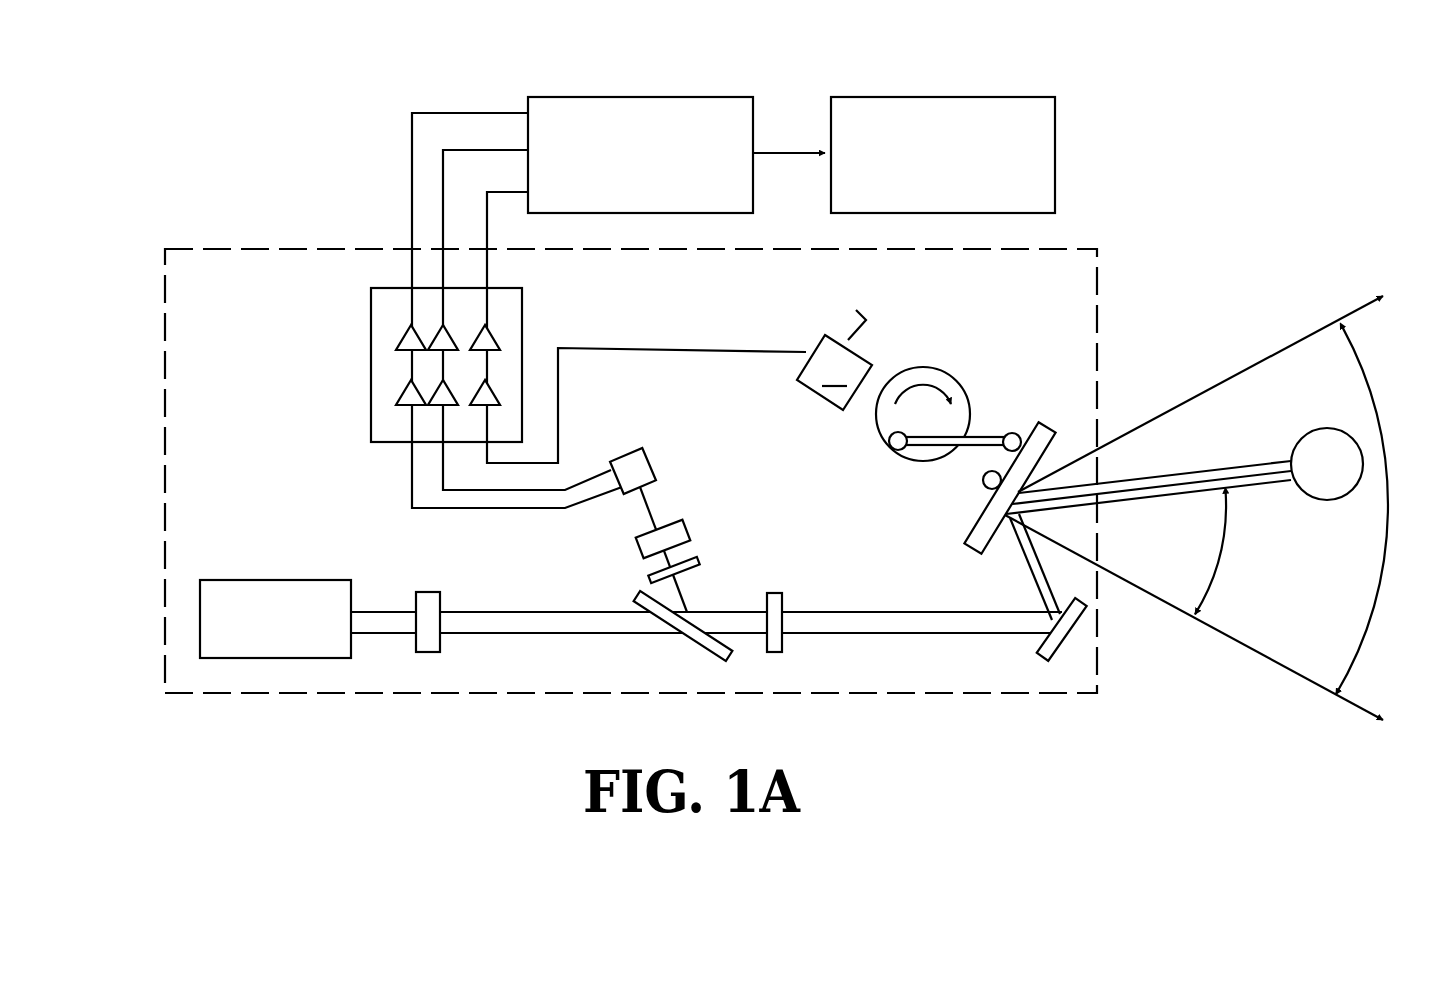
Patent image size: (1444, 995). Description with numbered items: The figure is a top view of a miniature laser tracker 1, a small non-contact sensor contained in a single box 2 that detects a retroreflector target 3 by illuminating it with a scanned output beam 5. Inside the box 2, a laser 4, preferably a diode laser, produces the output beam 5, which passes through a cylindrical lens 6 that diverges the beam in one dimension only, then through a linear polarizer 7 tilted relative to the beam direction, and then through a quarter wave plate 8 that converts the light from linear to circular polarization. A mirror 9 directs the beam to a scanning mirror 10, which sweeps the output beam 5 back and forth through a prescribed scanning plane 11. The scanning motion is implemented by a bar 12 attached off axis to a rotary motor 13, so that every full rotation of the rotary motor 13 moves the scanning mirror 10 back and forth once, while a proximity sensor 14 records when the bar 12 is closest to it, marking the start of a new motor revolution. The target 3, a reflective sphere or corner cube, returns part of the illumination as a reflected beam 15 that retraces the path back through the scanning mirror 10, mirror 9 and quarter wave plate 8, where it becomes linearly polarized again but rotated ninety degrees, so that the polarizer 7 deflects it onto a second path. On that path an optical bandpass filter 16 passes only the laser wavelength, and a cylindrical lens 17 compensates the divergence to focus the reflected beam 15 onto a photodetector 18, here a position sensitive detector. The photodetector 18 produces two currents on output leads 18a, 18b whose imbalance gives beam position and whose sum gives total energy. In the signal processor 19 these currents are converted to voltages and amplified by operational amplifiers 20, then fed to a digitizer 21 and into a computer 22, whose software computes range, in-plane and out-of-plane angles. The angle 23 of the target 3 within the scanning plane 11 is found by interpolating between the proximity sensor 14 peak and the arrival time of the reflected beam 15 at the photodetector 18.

The miniature laser tracker 1 is at (318, 184).
The box 2 is at (227, 249).
The retroreflector target 3 is at (1315, 482).
The laser 4 is at (246, 580).
The output beam 5 is at (375, 633).
The cylindrical lens 6 is at (440, 645).
The polarizer 7 is at (694, 641).
The quarter wave plate 8 is at (783, 640).
The mirror 9 is at (1074, 652).
The scanning mirror 10 is at (975, 526).
The scanning plane 11 is at (1378, 581).
The bar 12 is at (965, 456).
The rotary motor 13 is at (937, 370).
The proximity sensor 14 is at (868, 347).
The reflected beam 15 is at (650, 508).
The optical bandpass filter 16 is at (700, 565).
The cylindrical lens 17 is at (689, 528).
The photodetector 18 is at (657, 470).
The output lead 18a is at (410, 483).
The output lead 18b is at (507, 490).
The signal processor 19 is at (371, 413).
The operational amplifiers 20 is at (398, 394).
The digitizer 21 is at (550, 97).
The computer 22 is at (845, 97).
The angle 23 is at (1227, 528).